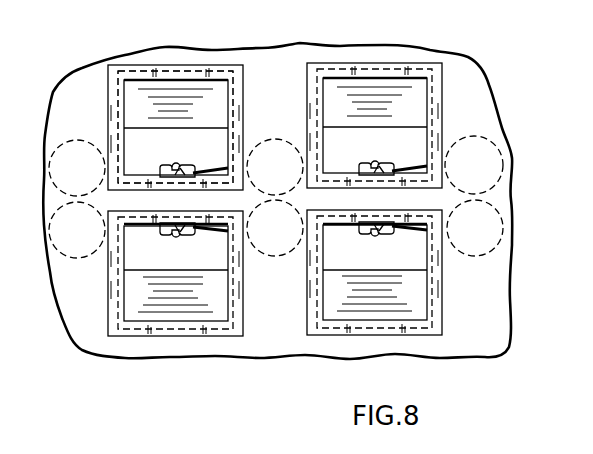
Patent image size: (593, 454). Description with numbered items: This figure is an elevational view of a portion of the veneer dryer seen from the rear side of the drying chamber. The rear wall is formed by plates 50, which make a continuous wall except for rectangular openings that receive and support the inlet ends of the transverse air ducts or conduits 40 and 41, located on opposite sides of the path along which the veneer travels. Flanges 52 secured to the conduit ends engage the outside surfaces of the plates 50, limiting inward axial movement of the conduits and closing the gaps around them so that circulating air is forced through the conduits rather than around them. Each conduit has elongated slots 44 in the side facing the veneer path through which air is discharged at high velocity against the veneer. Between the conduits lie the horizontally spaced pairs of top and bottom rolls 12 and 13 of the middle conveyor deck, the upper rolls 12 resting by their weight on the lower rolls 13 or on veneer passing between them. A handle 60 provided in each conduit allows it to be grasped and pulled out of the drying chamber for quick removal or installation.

The top rolls 12 is at (42, 150).
The bottom rolls 13 is at (43, 204).
The air duct 40 is at (223, 68).
The air duct 41 is at (118, 273).
The elongated slot 44 is at (173, 162).
The plate 50 is at (288, 53).
The flange 52 is at (181, 67).
The handle 60 is at (204, 153).